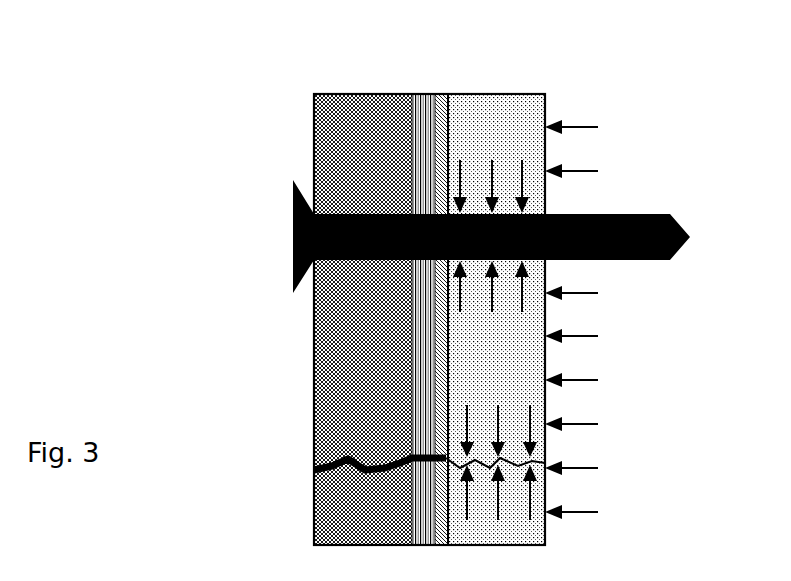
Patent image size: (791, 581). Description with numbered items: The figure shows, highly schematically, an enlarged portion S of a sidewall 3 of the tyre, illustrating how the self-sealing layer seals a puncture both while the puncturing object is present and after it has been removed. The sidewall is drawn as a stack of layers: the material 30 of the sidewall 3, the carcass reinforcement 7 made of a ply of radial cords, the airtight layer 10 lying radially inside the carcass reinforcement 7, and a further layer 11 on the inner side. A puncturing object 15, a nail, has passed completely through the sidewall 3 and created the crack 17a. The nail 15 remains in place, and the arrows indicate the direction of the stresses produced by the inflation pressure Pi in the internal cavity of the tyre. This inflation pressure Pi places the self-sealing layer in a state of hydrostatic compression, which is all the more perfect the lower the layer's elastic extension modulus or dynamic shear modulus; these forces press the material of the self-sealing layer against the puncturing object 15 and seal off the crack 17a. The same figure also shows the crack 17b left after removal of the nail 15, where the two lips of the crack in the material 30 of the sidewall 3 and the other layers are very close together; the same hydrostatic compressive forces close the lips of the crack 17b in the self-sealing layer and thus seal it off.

The sidewall 3 is at (244, 211).
The carcass reinforcement 7 is at (425, 158).
The airtight layer 10 is at (448, 94).
The outer layer 11 is at (500, 115).
The puncturing object 15 is at (598, 237).
The crack 17a is at (450, 262).
The crack 17b is at (363, 470).
The material of the sidewall 30 is at (345, 160).
The portion of a sidewall S is at (660, 124).
The inflation pressure Pi is at (626, 319).